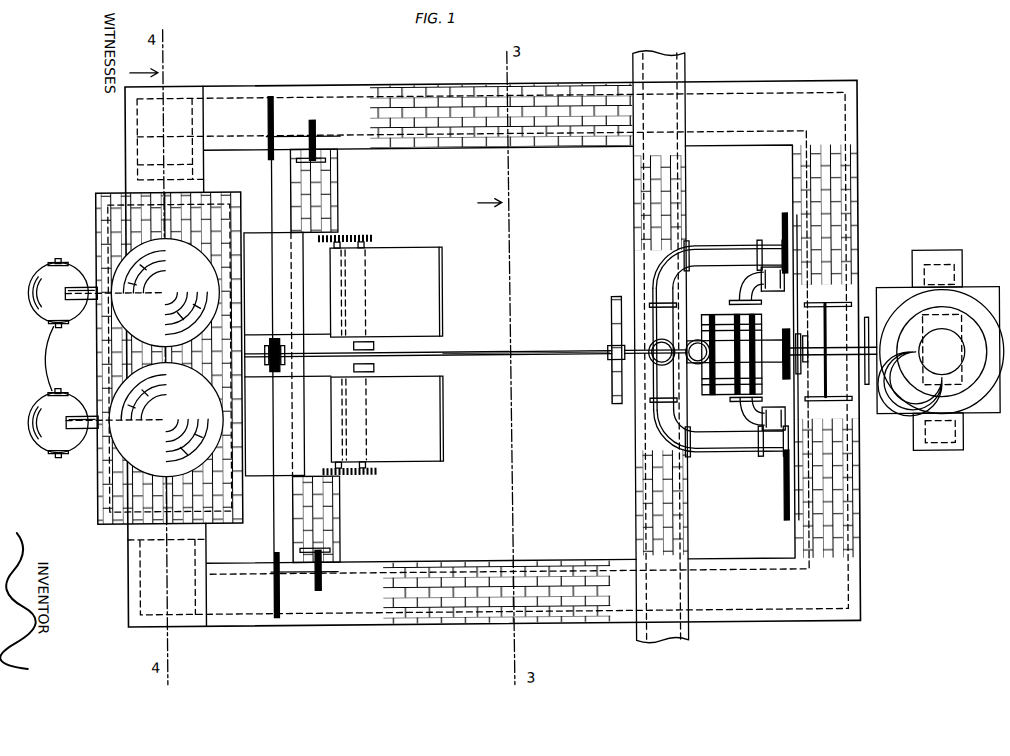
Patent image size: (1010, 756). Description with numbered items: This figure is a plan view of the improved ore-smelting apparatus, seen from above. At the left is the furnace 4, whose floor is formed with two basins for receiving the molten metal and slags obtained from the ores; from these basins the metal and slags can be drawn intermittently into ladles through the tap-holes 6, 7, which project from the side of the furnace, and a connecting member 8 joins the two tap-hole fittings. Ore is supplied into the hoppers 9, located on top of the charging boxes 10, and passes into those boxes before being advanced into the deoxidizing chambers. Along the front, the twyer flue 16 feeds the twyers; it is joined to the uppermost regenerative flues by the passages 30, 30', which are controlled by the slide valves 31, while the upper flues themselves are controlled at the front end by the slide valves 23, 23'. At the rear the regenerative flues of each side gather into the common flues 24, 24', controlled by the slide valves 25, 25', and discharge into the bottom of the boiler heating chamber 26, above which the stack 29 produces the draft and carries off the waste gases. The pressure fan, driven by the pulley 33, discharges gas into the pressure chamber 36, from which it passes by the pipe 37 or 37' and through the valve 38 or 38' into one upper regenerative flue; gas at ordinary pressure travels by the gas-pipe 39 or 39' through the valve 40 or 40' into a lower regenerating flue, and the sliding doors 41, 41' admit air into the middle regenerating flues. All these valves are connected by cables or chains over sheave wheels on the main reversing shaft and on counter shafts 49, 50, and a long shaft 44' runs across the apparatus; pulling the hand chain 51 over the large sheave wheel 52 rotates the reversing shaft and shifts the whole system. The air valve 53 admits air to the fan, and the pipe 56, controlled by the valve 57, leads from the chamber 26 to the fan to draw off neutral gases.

The furnace 4 is at (241, 421).
The tap-hole 6 is at (75, 408).
The tap-hole 7 is at (78, 306).
The connecting member 8 is at (47, 359).
The hopper 9 is at (428, 325).
The charging box 10 is at (288, 354).
The twyer flue 16 is at (345, 237).
The slide valve 23 is at (289, 584).
The slide valve 23' is at (286, 323).
The common flue 24 is at (827, 488).
The common flue 24' is at (825, 214).
The slide valve 25 is at (825, 350).
The slide valve 25' is at (828, 350).
The boiler heating chamber 26 is at (909, 291).
The stack 29 is at (940, 352).
The passage 30 is at (326, 519).
The passage 30' is at (323, 191).
The slide valve 31 is at (298, 164).
The pulley 33 is at (652, 347).
The pressure chamber 36 is at (752, 383).
The pipe 37 is at (737, 411).
The pipe 37' is at (732, 288).
The valve 38 is at (754, 422).
The valve 38' is at (754, 278).
The gas-pipe 39 is at (719, 441).
The gas-pipe 39' is at (717, 255).
The valve 40 is at (768, 452).
The valve 40' is at (771, 246).
The sliding door 41 is at (774, 485).
The sliding door 41' is at (774, 230).
The shaft 44' is at (526, 364).
The counter shaft 49 is at (311, 577).
The counter shaft 50 is at (308, 138).
The hand chain 51 is at (613, 410).
The large sheave wheel 52 is at (610, 376).
The air valve 53 is at (686, 364).
The pipe 56 is at (784, 336).
The valve 57 is at (797, 341).